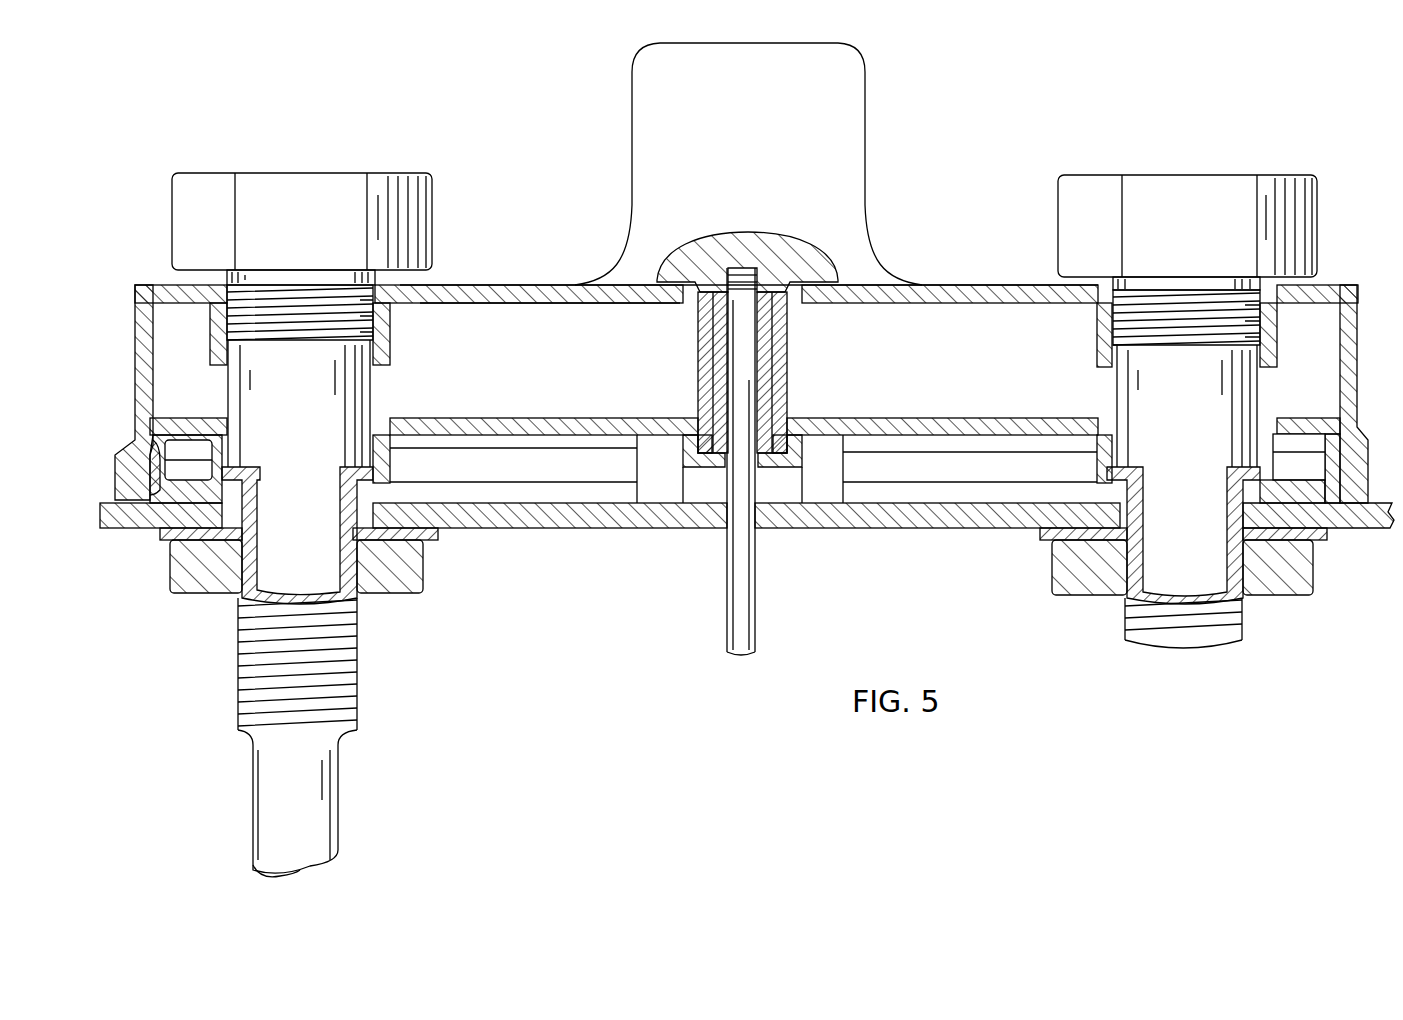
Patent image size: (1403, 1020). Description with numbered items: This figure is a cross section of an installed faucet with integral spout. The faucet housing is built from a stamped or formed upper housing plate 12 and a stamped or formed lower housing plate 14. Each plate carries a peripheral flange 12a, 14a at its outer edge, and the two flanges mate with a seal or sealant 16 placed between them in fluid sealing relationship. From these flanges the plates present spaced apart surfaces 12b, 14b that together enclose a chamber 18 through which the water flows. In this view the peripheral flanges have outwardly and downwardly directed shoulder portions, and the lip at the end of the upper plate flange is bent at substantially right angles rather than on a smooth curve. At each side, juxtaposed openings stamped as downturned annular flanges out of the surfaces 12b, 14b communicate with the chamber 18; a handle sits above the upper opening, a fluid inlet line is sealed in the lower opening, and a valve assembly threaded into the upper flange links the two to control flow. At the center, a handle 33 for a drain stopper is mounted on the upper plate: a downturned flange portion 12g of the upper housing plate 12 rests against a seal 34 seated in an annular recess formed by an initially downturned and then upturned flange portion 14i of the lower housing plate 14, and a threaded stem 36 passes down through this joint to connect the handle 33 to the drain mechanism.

The upper housing plate 12 is at (728, 273).
The peripheral flange 12a is at (130, 446).
The surface 12b is at (463, 285).
The downturned flange portion 12g is at (782, 388).
The lower housing plate 14 is at (570, 432).
The peripheral flange 14a is at (180, 446).
The surface 14b is at (485, 419).
The flange portion 14i is at (710, 352).
The seal 16 is at (163, 440).
The chamber 18 is at (514, 312).
The handle 33 is at (720, 242).
The seal 34 is at (705, 445).
The threaded stem 36 is at (745, 490).